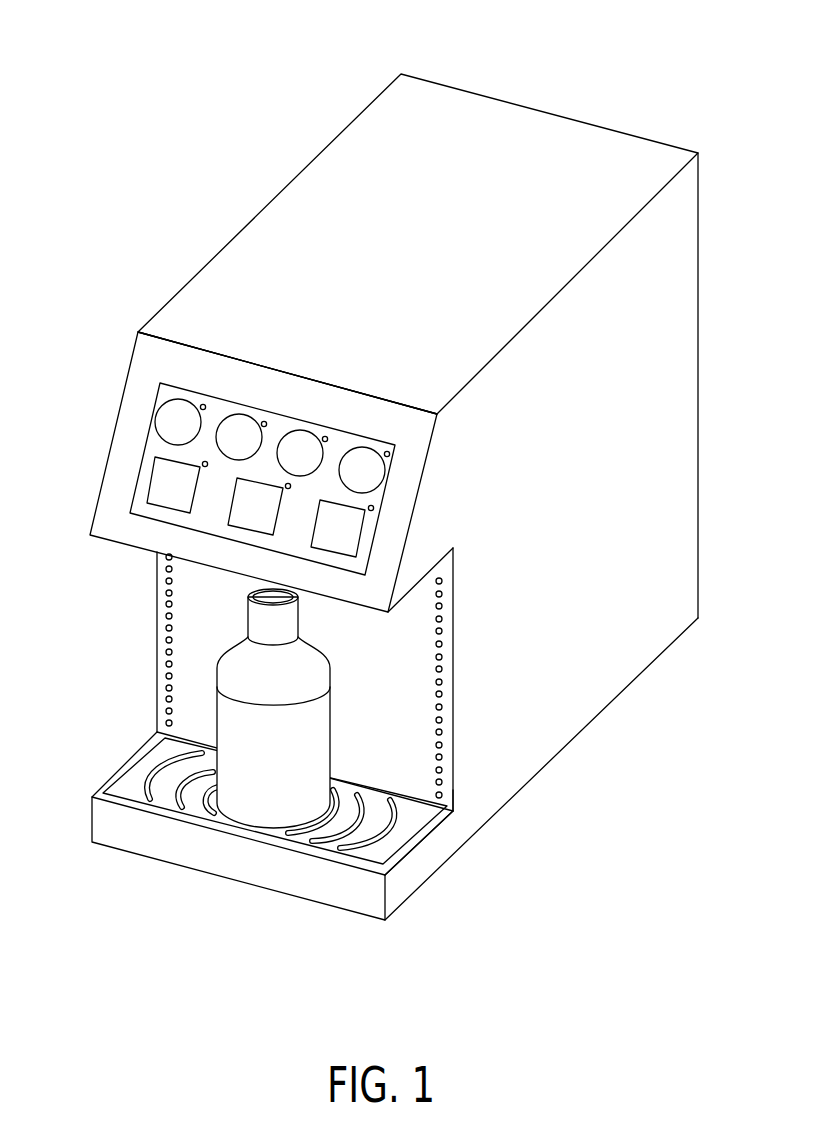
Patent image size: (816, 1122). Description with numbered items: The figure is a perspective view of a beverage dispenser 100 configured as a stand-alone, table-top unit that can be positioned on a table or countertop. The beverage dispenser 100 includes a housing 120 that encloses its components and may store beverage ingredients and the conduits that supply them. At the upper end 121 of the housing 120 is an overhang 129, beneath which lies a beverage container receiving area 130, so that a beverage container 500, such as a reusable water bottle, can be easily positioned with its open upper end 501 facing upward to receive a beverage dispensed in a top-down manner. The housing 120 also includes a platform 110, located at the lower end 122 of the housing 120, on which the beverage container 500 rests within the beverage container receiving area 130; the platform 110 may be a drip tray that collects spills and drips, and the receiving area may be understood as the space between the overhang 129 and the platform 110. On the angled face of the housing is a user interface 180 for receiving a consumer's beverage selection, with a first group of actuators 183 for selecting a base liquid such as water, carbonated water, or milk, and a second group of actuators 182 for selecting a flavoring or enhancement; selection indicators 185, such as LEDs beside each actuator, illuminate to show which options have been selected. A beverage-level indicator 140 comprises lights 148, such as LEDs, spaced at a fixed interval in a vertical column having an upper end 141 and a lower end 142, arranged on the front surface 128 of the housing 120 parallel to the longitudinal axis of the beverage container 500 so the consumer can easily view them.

The beverage dispenser 100 is at (112, 83).
The platform 110 is at (125, 788).
The housing 120 is at (127, 380).
The upper end 121 is at (246, 360).
The lower end 122 is at (362, 917).
The front surface 128 is at (368, 669).
The overhang 129 is at (402, 582).
The beverage container receiving area 130 is at (142, 634).
The beverage-level indicator 140 is at (466, 688).
The upper end 141 is at (441, 581).
The lower end 142 is at (453, 800).
The lights 148 is at (441, 770).
The user interface 180 is at (125, 481).
The actuators 182 is at (172, 430).
The actuators 183 is at (342, 535).
The selection indicators 185 is at (203, 405).
The beverage container 500 is at (230, 735).
The open upper end 501 is at (260, 598).